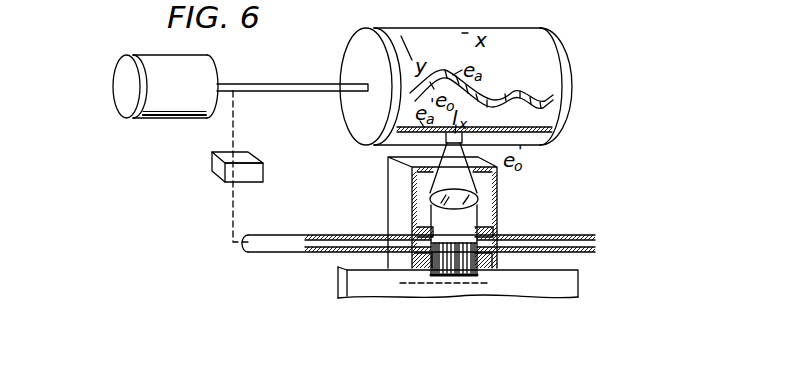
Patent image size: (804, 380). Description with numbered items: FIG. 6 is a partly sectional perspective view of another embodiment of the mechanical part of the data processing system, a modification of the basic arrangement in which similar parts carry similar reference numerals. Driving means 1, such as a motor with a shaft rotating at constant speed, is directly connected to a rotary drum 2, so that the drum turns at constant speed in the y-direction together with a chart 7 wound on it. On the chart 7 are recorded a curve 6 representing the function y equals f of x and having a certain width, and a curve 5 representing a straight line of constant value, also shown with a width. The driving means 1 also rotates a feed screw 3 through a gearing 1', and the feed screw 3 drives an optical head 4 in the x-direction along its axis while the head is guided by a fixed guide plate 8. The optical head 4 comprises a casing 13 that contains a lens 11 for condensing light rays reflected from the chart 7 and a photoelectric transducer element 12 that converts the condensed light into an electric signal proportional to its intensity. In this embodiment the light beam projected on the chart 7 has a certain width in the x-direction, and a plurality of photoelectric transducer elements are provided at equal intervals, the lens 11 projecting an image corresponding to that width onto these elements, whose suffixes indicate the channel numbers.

The driving means 1 is at (165, 110).
The gearing 1' is at (223, 176).
The rotary drum 2 is at (565, 50).
The feed screw 3 is at (318, 235).
The optical head 4 is at (503, 198).
The curve 5 is at (530, 134).
The curve 6 is at (507, 93).
The chart 7 is at (554, 80).
The fixed guide plate 8 is at (578, 283).
The lens 11 is at (430, 200).
The photoelectric transducer element 12 is at (440, 288).
The casing 13 is at (498, 222).